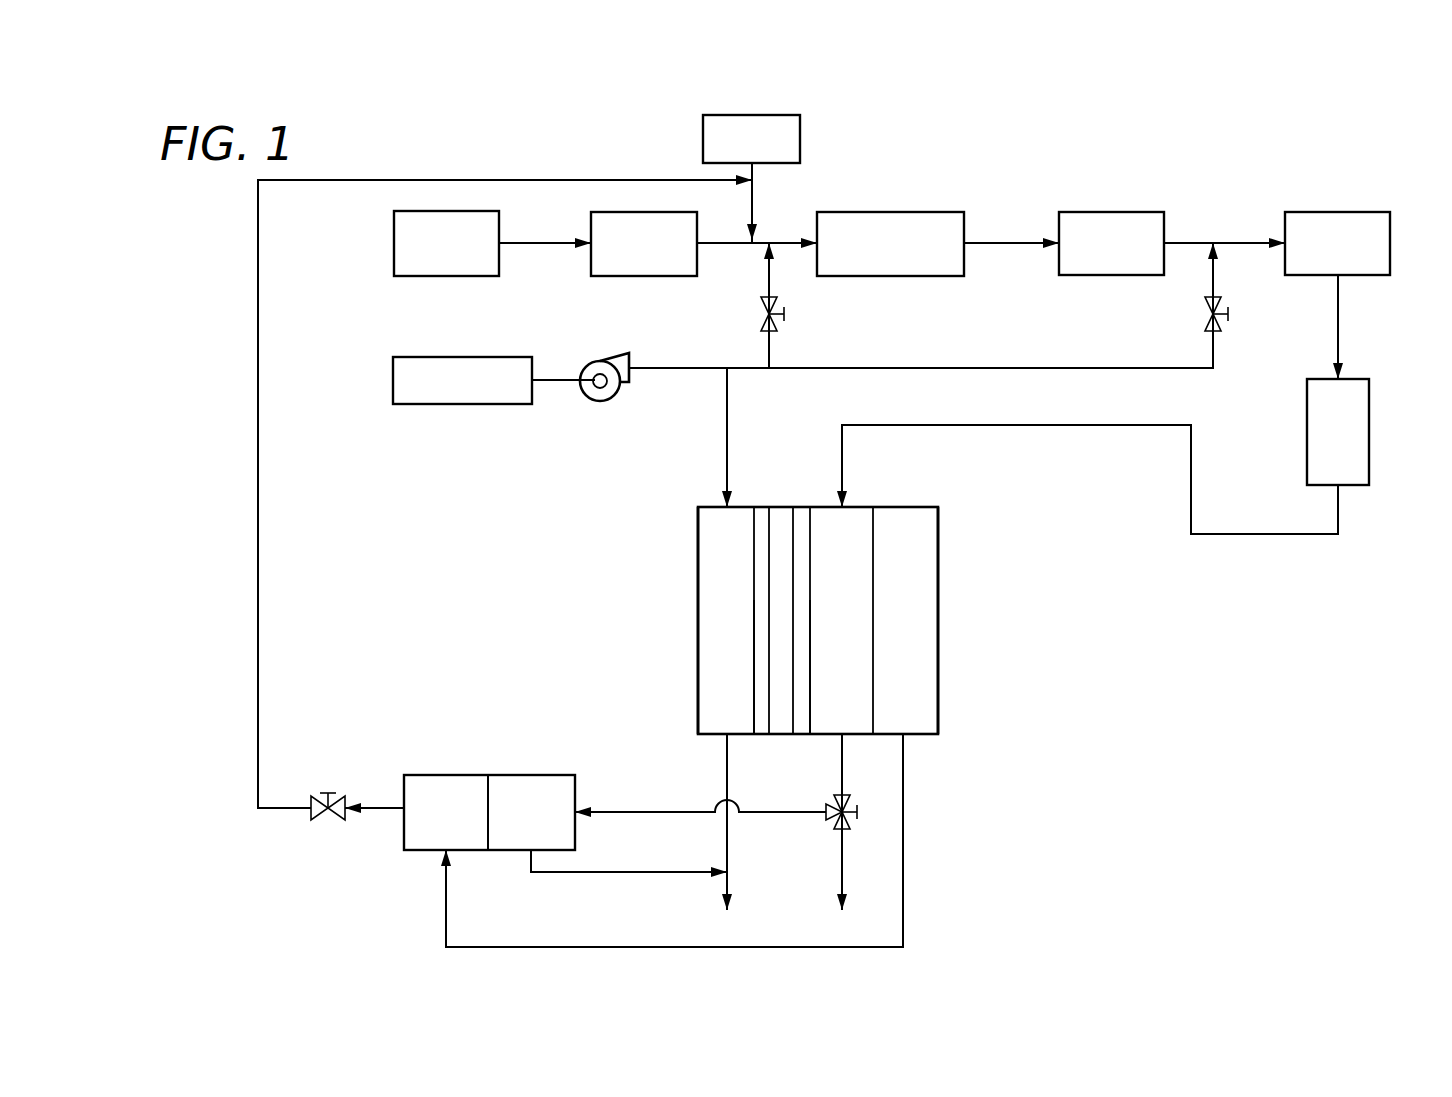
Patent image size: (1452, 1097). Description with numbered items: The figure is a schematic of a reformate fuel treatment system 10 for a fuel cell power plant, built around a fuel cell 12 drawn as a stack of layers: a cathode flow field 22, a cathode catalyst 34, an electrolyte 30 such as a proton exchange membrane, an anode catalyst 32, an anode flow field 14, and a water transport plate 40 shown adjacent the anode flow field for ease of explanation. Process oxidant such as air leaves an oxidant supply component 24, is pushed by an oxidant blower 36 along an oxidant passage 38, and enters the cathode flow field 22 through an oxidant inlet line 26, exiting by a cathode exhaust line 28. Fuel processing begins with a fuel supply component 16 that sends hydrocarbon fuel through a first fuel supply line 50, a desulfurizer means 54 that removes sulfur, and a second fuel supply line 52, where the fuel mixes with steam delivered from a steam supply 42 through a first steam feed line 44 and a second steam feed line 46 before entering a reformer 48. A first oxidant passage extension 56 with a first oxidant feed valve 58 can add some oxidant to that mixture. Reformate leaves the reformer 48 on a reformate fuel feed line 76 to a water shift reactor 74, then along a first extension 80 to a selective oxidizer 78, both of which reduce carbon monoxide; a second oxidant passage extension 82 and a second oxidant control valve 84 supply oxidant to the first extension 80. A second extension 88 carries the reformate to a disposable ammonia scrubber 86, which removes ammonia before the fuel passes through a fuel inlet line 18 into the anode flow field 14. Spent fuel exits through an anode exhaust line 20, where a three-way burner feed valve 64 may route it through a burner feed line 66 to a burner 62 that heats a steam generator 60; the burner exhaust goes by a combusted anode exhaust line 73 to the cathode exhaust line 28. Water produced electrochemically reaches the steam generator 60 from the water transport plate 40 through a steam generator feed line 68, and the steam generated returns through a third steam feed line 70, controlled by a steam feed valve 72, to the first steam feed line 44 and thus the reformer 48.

The reformate fuel treatment system 10 is at (1252, 178).
The fuel cell 12 is at (770, 610).
The anode flow field 14 is at (841, 620).
The fuel supply component 16 is at (394, 252).
The fuel inlet line 18 is at (985, 425).
The anode exhaust line 20 is at (845, 763).
The cathode flow field 22 is at (726, 620).
The oxidant supply component 24 is at (452, 404).
The oxidant inlet line 26 is at (725, 433).
The cathode exhaust line 28 is at (722, 763).
The electrolyte 30 is at (780, 520).
The anode catalyst 32 is at (800, 728).
The cathode catalyst 34 is at (762, 728).
The oxidant blower 36 is at (605, 398).
The oxidant passage 38 is at (688, 368).
The water transport plate 40 is at (914, 620).
The steam supply 42 is at (706, 153).
The first steam feed line 44 is at (755, 208).
The second steam feed line 46 is at (785, 250).
The reformer 48 is at (895, 215).
The first fuel supply line 50 is at (532, 243).
The second fuel supply line 52 is at (716, 243).
The desulfurizer means 54 is at (648, 262).
The first oxidant passage extension 56 is at (766, 278).
The first oxidant feed valve 58 is at (775, 333).
The steam generator 60 is at (489, 812).
The burner 62 is at (516, 812).
The three-way burner feed valve 64 is at (848, 832).
The burner feed line 66 is at (795, 814).
The steam generator feed line 68 is at (628, 947).
The third steam feed line 70 is at (265, 657).
The steam feed valve 72 is at (333, 792).
The combusted anode exhaust line 73 is at (618, 872).
The water shift reactor 74 is at (1118, 215).
The reformate fuel feed line 76 is at (1000, 243).
The selective oxidizer 78 is at (1390, 225).
The first extension of the reformate fuel feed line 80 is at (1240, 243).
The second oxidant passage extension 82 is at (1045, 368).
The second oxidant control valve 84 is at (1205, 317).
The disposable ammonia scrubber 86 is at (1358, 428).
The second extension of the reformate fuel feed line 88 is at (1336, 298).